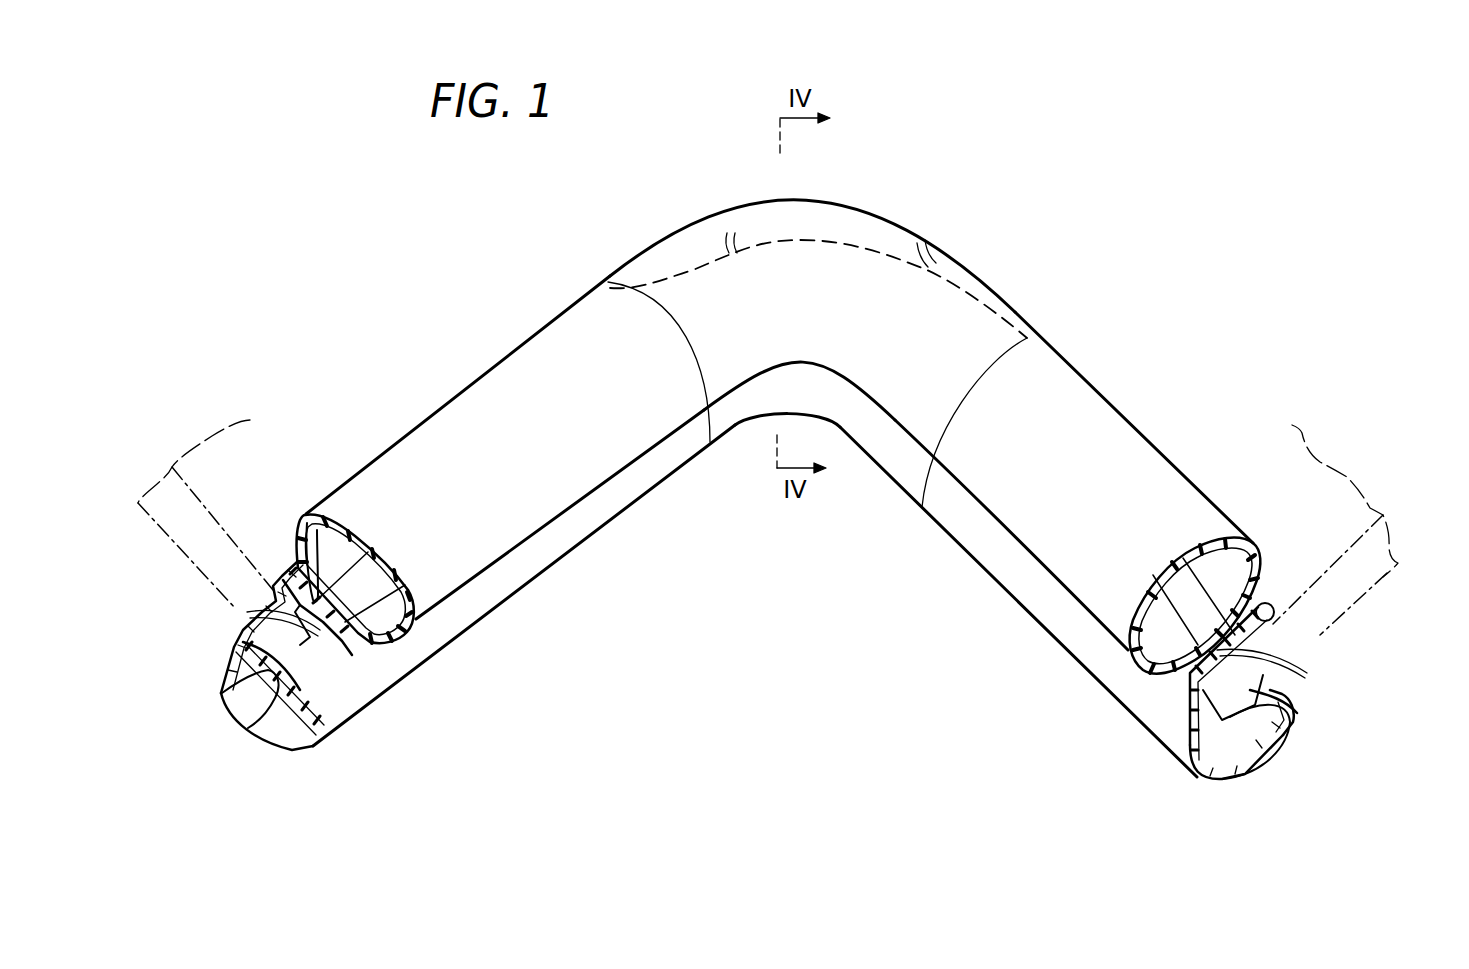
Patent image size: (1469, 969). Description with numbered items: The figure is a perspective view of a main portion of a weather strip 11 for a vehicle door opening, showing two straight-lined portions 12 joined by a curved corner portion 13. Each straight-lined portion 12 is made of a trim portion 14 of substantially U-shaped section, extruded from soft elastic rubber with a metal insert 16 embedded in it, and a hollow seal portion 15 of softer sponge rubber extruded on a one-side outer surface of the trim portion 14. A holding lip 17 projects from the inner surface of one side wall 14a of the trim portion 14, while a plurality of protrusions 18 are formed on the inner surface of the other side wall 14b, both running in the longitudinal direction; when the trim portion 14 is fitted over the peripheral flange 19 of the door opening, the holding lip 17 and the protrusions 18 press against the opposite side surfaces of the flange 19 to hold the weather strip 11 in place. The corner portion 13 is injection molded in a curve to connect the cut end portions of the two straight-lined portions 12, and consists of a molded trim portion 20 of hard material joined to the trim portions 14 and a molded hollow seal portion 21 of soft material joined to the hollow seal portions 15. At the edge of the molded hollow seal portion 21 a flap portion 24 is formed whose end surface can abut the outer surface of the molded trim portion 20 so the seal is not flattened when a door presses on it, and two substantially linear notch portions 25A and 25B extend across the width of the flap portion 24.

The weather strip 11 is at (782, 584).
The straight-lined portion 12 is at (427, 309).
The corner portion 13 is at (860, 150).
The trim portion 14 is at (347, 703).
The one side wall 14a is at (267, 687).
The other side wall 14b is at (305, 518).
The hollow seal portion 15 is at (378, 487).
The insert 16 is at (303, 730).
The holding lip 17 is at (290, 657).
The protrusions 18 is at (290, 632).
The peripheral flange 19 is at (193, 567).
The molded trim portion 20 is at (868, 430).
The molded hollow seal portion 21 is at (963, 273).
The flap portion 24 is at (813, 237).
The notch portion 25A is at (921, 247).
The notch portion 25B is at (726, 219).